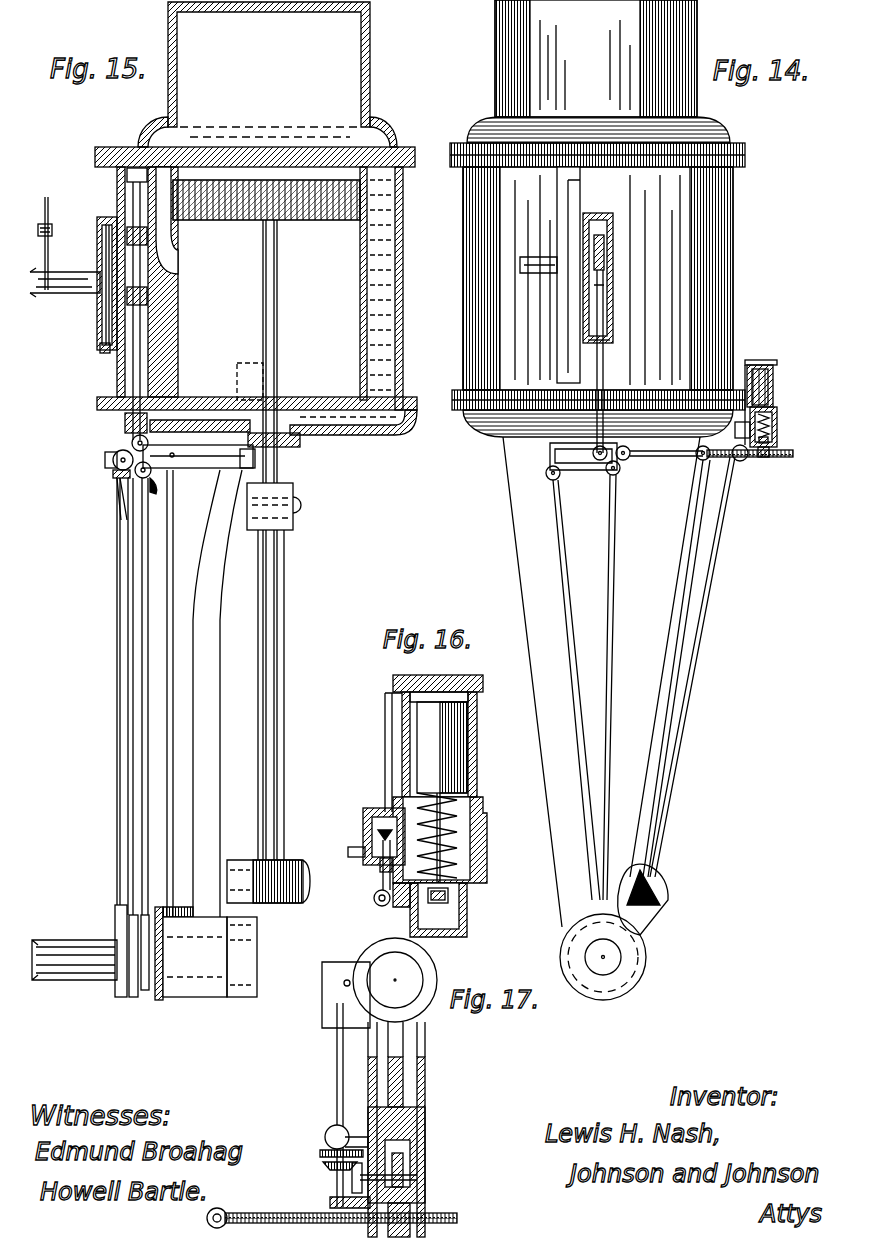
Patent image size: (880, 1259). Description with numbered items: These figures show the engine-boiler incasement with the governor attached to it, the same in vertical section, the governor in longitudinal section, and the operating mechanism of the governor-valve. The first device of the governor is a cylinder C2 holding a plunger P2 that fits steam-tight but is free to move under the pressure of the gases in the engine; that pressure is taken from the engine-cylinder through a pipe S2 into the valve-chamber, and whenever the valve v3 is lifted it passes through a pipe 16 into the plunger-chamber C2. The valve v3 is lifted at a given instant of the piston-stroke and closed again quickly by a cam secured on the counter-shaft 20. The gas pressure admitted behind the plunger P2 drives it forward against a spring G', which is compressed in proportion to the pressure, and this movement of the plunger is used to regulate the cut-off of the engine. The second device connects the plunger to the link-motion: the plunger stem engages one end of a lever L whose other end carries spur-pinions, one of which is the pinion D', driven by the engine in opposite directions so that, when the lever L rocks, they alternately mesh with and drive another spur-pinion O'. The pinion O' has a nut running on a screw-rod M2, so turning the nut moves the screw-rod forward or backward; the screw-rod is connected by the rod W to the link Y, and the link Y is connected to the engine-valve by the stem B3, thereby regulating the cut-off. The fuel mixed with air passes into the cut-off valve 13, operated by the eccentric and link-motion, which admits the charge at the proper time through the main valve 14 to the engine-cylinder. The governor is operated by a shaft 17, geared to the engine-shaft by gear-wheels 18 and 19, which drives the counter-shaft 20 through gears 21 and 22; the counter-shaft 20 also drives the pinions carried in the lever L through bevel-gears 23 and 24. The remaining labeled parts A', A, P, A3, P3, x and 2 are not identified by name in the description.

In FIG. 15, the upper tank / reservoir A' is at (267, 74).
In FIG. 14, the upper tank / reservoir A' is at (598, 71).
In FIG. 15, the cylinder body A is at (256, 297).
In FIG. 14, the cylinder body A is at (600, 535).
In FIG. 15, the piston P is at (266, 520).
In FIG. 15, the main valve 14 is at (137, 304).
In FIG. 15, the cut-off valve 13 is at (100, 253).
In FIG. 14, the cut-off valve 13 is at (592, 249).
In FIG. 15, the spring G' is at (56, 243).
In FIG. 16, the spring G' is at (442, 835).
In FIG. 15, the adjusting nut x is at (36, 232).
In FIG. 16, the adjusting nut x is at (382, 888).
In FIG. 15, the supply pipe A3 is at (65, 292).
In FIG. 15, the stem B3 is at (95, 362).
In FIG. 14, the stem B3 is at (602, 360).
In FIG. 15, the spur-pinion D' is at (109, 427).
In FIG. 17, the spur-pinion D' is at (404, 1162).
In FIG. 15, the lever L is at (199, 456).
In FIG. 16, the lever L is at (438, 910).
In FIG. 17, the lever L is at (396, 1129).
In FIG. 15, the spur-pinion O' is at (112, 463).
In FIG. 17, the spur-pinion O' is at (421, 1223).
In FIG. 15, the pin 2 is at (158, 483).
In FIG. 15, the shaft 17 is at (179, 708).
In FIG. 14, the shaft 17 is at (644, 728).
In FIG. 15, the gear-wheel 19 is at (175, 947).
In FIG. 15, the gear-wheel 18 is at (171, 928).
In FIG. 14, the link Y is at (588, 466).
In FIG. 14, the rod W is at (670, 461).
In FIG. 14, the screw-rod M2 is at (754, 461).
In FIG. 17, the screw-rod M2 is at (332, 1224).
In FIG. 14, the pipe S2 is at (733, 436).
In FIG. 16, the pipe S2 is at (347, 855).
In FIG. 14, the plunger P2 is at (774, 377).
In FIG. 14, the cylinder C2 is at (772, 426).
In FIG. 16, the cylinder C2 is at (444, 779).
In FIG. 17, the cylinder C2 is at (395, 980).
In FIG. 16, the piston of auxiliary cylinder P3 is at (442, 792).
In FIG. 16, the pipe 16 is at (387, 752).
In FIG. 16, the valve v3 is at (365, 825).
In FIG. 16, the counter-shaft 20 is at (372, 905).
In FIG. 17, the counter-shaft 20 is at (345, 1084).
In FIG. 17, the gear 21 is at (325, 1133).
In FIG. 17, the gear 22 is at (322, 1156).
In FIG. 17, the bevel-gear 23 is at (330, 1170).
In FIG. 17, the bevel-gear 24 is at (352, 1188).